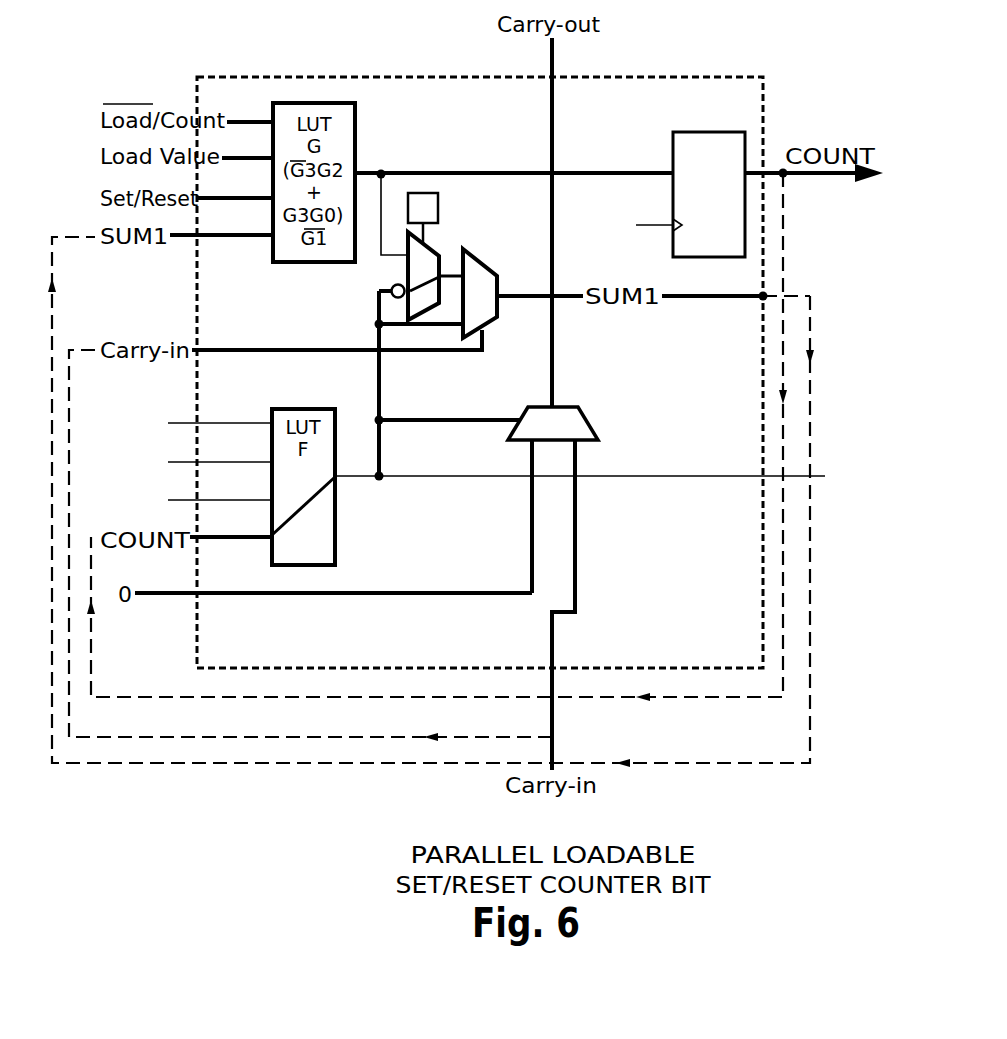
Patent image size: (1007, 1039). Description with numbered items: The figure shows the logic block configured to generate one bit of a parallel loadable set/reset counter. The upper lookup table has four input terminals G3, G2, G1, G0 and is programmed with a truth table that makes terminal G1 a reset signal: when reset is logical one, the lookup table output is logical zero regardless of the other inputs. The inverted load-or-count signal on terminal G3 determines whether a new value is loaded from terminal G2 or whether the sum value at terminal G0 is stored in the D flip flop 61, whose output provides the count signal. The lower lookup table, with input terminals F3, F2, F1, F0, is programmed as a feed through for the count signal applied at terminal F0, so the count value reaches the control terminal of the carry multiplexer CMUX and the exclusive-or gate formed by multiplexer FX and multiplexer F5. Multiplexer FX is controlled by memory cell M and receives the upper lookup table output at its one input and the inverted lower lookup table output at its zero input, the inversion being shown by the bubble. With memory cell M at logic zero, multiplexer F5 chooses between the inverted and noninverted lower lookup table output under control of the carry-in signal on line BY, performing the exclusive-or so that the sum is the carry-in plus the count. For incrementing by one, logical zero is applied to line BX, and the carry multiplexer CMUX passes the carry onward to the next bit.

The D flip flop 61 is at (708, 132).
The multiplexer F5 is at (472, 255).
The multiplexer FX is at (407, 275).
The carry multiplexer CMUX is at (578, 420).
The memory cell M is at (423, 218).
The line BX is at (333, 581).
The line BY is at (337, 339).
The LUT G input terminal G3 is at (250, 111).
The LUT G input terminal G2 is at (247, 148).
The LUT G input terminal G1 is at (235, 187).
The LUT G input terminal G0 is at (221, 225).
The LUT F input terminal F3 is at (220, 413).
The LUT F input terminal F2 is at (220, 451).
The LUT F input terminal F1 is at (220, 489).
The LUT F input terminal F0 is at (231, 526).